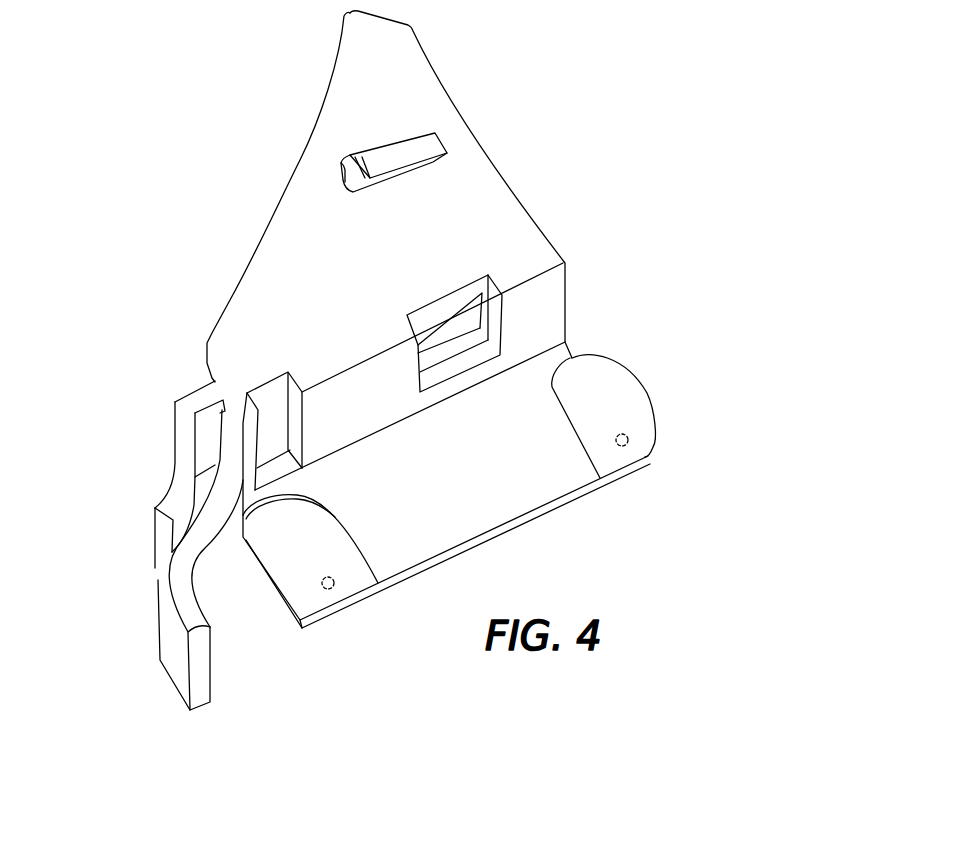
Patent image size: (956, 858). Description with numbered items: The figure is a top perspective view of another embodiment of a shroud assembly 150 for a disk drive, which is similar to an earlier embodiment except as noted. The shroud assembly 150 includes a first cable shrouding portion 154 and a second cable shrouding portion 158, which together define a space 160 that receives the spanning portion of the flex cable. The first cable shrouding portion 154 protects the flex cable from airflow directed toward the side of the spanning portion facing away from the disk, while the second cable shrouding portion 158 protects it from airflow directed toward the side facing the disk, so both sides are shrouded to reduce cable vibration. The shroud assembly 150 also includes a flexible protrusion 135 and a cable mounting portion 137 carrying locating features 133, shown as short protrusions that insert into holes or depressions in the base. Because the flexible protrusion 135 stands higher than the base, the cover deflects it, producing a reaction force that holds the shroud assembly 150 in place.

The locating features 133 is at (334, 587).
The flexible protrusion 135 is at (412, 152).
The cable mounting portion 137 is at (479, 496).
The shroud assembly 150 is at (511, 135).
The first cable shrouding portion 154 is at (220, 555).
The second cable shrouding portion 158 is at (175, 445).
The space 160 is at (136, 597).